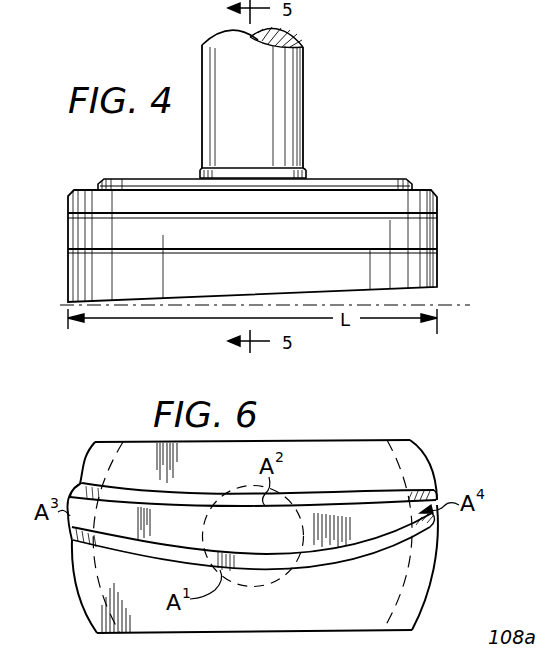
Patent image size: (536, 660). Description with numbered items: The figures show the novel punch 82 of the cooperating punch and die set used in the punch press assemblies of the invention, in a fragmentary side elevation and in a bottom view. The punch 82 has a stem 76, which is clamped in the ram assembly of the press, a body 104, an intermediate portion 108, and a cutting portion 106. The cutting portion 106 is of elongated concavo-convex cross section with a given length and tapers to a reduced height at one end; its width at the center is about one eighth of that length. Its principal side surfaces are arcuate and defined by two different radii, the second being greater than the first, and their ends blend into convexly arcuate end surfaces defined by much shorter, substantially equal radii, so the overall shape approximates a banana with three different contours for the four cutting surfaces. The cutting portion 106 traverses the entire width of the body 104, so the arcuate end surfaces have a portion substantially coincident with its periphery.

In FIG. 4, the stem 76 is at (303, 136).
In FIG. 6, the stem 76 is at (281, 579).
In FIG. 4, the punch 82 is at (445, 232).
In FIG. 4, the body 104 is at (384, 203).
In FIG. 6, the body 104 is at (330, 452).
In FIG. 4, the cutting portion 106 is at (78, 281).
In FIG. 6, the cutting portion 106 is at (432, 502).
In FIG. 4, the intermediate portion 108 is at (74, 221).
In FIG. 6, the intermediate portion 108 is at (402, 493).